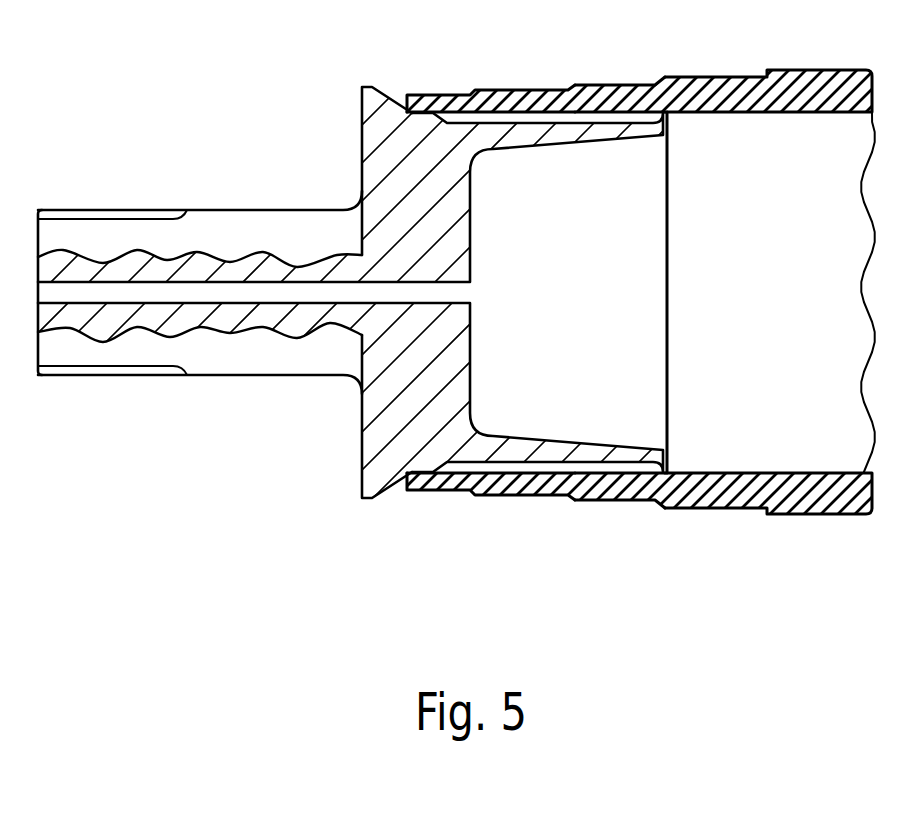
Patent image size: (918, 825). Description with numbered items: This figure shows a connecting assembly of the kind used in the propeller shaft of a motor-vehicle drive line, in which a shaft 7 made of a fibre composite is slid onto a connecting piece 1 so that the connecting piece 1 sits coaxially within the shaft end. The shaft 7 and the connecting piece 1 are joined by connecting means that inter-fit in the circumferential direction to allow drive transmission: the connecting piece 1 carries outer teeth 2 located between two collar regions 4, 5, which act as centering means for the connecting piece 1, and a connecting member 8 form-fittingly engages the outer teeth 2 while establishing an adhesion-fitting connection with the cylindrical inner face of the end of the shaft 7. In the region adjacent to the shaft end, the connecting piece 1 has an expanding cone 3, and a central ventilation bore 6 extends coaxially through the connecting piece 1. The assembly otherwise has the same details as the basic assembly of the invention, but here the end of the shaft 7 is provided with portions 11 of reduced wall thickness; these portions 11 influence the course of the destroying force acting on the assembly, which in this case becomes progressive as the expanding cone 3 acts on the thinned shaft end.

The connecting piece 1 is at (377, 160).
The outer teeth 2 is at (642, 110).
The expanding cone 3 is at (381, 102).
The collar region 4 is at (427, 490).
The collar region 5 is at (660, 481).
The central ventilation bore 6 is at (122, 290).
The shaft 7 is at (508, 100).
The connecting member 8 is at (577, 87).
The portions of reduced thickness 11 is at (727, 74).